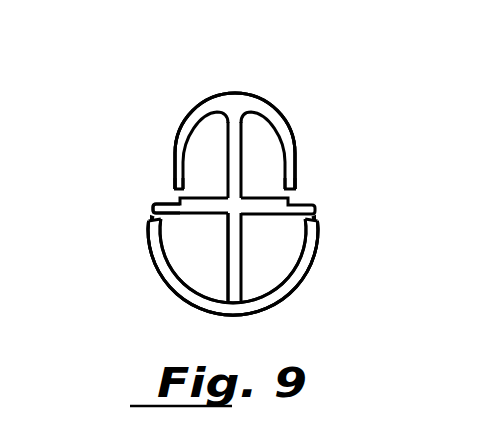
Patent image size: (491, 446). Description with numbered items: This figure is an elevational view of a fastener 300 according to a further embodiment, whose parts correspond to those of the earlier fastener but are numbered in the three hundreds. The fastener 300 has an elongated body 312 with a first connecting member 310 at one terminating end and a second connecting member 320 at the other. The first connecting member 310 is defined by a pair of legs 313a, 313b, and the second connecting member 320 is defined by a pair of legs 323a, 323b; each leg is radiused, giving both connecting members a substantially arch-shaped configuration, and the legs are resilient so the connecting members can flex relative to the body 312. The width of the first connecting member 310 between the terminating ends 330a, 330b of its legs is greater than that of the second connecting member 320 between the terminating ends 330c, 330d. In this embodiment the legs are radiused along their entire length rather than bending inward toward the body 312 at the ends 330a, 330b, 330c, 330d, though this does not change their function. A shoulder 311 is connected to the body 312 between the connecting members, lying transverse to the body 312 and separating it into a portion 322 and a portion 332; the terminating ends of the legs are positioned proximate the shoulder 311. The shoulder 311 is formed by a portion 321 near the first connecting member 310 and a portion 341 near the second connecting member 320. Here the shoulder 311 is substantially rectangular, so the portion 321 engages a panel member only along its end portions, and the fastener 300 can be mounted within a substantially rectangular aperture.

The fastener 300 is at (188, 102).
The first connecting member 310 is at (274, 305).
The shoulder 311 is at (320, 203).
The body 312 is at (247, 272).
The leg 313a is at (190, 302).
The leg 313b is at (314, 257).
The second connecting member 320 is at (270, 103).
The portion of shoulder 321 is at (153, 208).
The portion of body 322 is at (243, 163).
The leg 323a is at (178, 132).
The leg 323b is at (287, 132).
The terminating end 330a is at (150, 221).
The terminating end 330b is at (316, 228).
The terminating end 330c is at (175, 185).
The terminating end 330d is at (298, 187).
The portion of body 332 is at (226, 257).
The portion of shoulder 341 is at (156, 203).